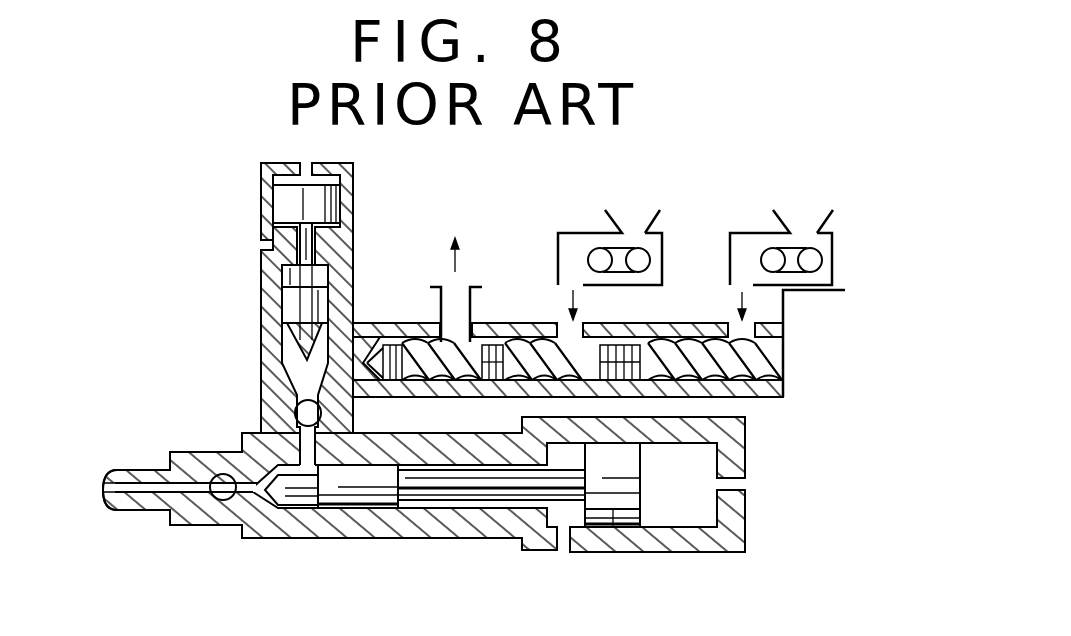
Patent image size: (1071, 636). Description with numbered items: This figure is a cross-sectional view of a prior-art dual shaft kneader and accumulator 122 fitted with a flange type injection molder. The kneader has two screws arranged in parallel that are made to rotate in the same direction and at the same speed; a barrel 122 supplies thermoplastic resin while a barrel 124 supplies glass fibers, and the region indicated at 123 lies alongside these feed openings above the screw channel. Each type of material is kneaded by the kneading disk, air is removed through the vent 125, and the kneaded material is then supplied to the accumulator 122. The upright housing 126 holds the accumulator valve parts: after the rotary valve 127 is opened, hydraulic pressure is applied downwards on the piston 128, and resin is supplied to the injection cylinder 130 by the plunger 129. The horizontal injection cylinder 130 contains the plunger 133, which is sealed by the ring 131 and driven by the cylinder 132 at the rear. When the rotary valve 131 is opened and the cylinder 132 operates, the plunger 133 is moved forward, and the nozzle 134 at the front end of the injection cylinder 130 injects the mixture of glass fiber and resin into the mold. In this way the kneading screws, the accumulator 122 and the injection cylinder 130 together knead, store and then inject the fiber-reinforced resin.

The dual shaft kneader and accumulator 122 is at (491, 296).
The second inlet 123 is at (740, 330).
The barrel 124 is at (567, 333).
The vent 125 is at (440, 307).
The valve housing 126 is at (262, 281).
The rotary valve 127 is at (296, 410).
The piston 128 is at (330, 203).
The plunger 129 is at (295, 330).
The injection cylinder 130 is at (284, 549).
The rotary valve 131 is at (223, 501).
The cylinder 132 is at (617, 511).
The plunger 133 is at (378, 496).
The nozzle 134 is at (104, 493).